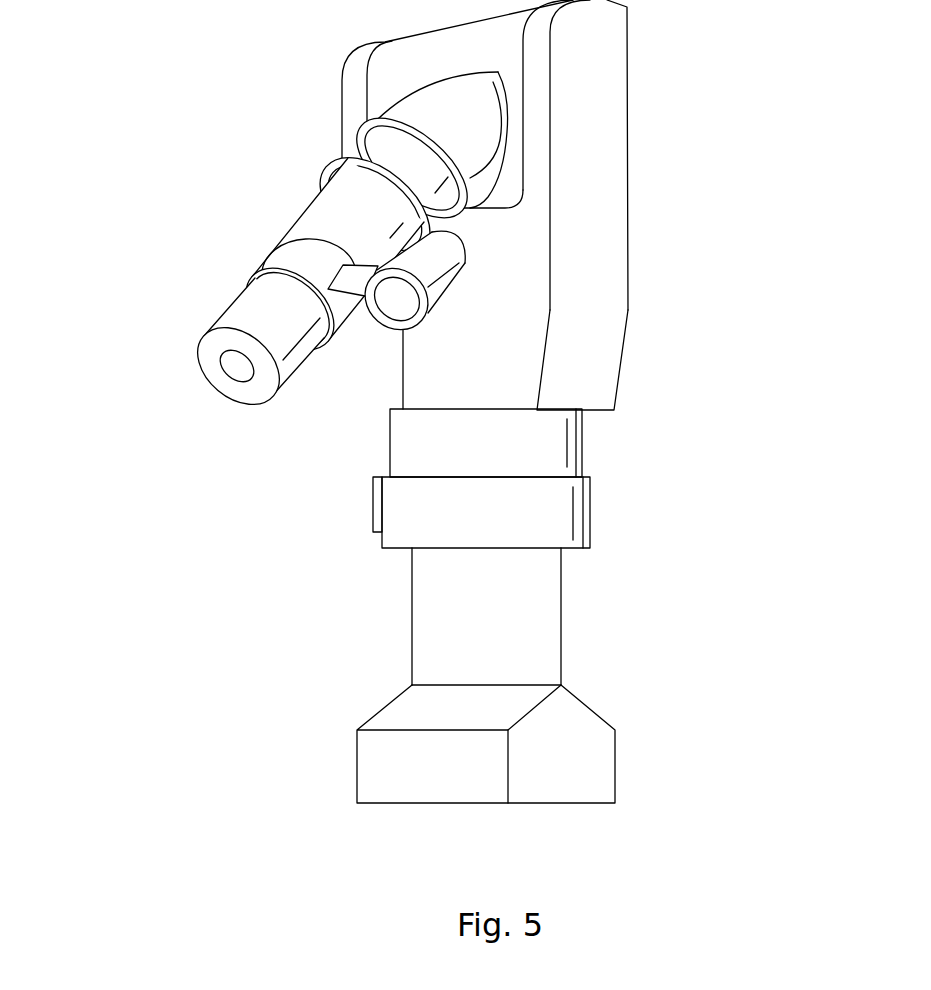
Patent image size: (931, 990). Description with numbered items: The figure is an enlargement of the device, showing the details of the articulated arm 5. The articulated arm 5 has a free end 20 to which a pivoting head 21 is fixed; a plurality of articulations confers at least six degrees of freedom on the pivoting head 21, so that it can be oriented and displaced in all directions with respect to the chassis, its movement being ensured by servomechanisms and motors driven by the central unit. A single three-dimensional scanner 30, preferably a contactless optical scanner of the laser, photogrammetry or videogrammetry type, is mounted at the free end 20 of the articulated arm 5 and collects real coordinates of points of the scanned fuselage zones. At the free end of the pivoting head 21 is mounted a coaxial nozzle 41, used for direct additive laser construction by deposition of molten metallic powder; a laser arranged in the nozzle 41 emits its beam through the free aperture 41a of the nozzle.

The free end 20 is at (605, 104).
The pivoting head 21 is at (266, 292).
The three-dimensional scanner 30 is at (447, 253).
The coaxial nozzle 41 is at (228, 322).
The free aperture 41a is at (237, 372).
The articulated arm 5 is at (610, 502).